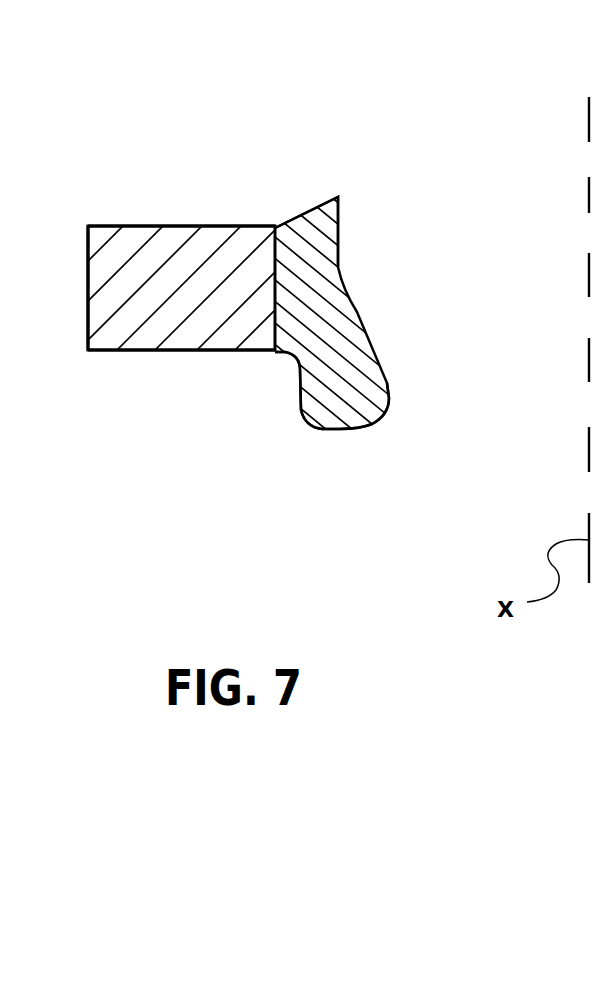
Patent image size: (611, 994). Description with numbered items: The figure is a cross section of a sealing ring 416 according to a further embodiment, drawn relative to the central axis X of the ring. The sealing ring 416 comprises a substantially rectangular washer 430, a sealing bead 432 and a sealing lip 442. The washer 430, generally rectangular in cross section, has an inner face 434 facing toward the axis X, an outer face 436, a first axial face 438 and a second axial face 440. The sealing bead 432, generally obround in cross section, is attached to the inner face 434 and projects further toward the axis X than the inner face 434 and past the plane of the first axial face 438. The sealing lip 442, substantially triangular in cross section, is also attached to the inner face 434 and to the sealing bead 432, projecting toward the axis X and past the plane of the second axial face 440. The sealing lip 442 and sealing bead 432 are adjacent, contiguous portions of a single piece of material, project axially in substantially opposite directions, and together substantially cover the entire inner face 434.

The sealing ring 416 is at (292, 266).
The washer 430 is at (195, 293).
The sealing bead 432 is at (307, 413).
The inner face 434 is at (277, 305).
The outer face 436 is at (87, 290).
The first axial face 438 is at (157, 352).
The second axial face 440 is at (174, 226).
The sealing lip 442 is at (322, 228).